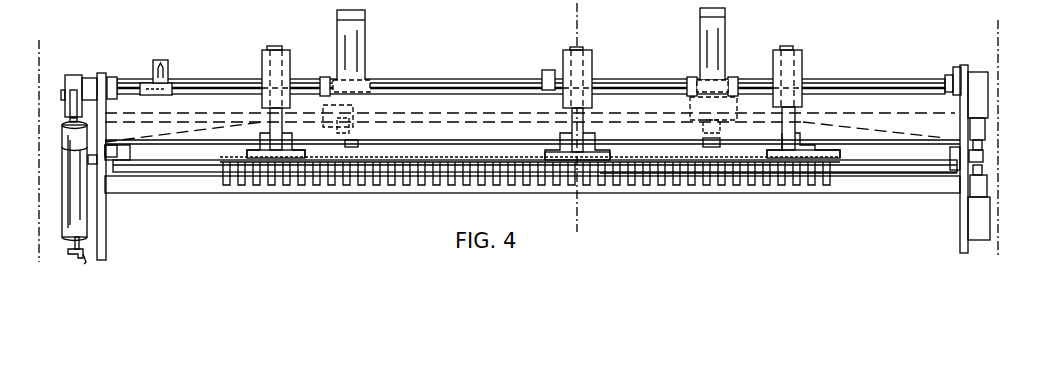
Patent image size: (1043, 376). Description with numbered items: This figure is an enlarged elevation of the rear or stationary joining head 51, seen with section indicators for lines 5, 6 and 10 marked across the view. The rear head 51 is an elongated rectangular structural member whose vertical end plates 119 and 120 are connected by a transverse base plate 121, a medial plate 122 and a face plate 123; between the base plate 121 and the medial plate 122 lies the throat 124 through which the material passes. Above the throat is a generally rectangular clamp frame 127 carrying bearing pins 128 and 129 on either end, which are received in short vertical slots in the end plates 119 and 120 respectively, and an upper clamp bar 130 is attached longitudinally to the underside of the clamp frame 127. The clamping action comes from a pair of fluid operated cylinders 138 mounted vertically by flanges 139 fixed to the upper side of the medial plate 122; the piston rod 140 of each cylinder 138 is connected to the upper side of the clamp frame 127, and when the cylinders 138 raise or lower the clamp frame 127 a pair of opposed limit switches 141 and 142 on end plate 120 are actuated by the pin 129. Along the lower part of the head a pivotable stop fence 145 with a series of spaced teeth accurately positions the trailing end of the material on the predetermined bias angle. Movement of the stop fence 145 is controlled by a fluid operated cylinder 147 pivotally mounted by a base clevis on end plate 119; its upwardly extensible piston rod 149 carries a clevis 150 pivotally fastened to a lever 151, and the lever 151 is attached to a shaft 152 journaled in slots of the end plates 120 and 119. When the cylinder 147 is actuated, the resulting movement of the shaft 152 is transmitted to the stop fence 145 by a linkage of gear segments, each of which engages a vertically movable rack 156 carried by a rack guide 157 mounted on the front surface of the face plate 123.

The section line 5- 5 is at (58, 58).
The section line 6- 6 is at (968, 33).
The section line 10- 10 is at (552, 21).
The rear head 51 is at (443, 52).
The end plate 119 is at (104, 228).
The end plate 120 is at (963, 222).
The base plate 121 is at (143, 187).
The medial plate 122 is at (200, 110).
The face plate 123 is at (220, 103).
The throat 124 is at (194, 173).
The clamp frame 127 is at (206, 155).
The bearing pin 128 is at (92, 162).
The bearing pin 129 is at (983, 153).
The upper clamp bar 130 is at (893, 163).
The fluid operated cylinder 138 is at (348, 32).
The flange 139 is at (358, 99).
The piston rod 140 is at (377, 117).
The limit switch 141 is at (978, 78).
The limit switch 142 is at (983, 227).
The stop fence 145 is at (402, 177).
The fluid operated cylinder 147 is at (62, 207).
The piston rod 149 is at (64, 122).
The clevis 150 is at (67, 102).
The lever 151 is at (73, 78).
The shaft 152 is at (128, 82).
The rack 156 is at (275, 47).
The rack guide 157 is at (262, 52).